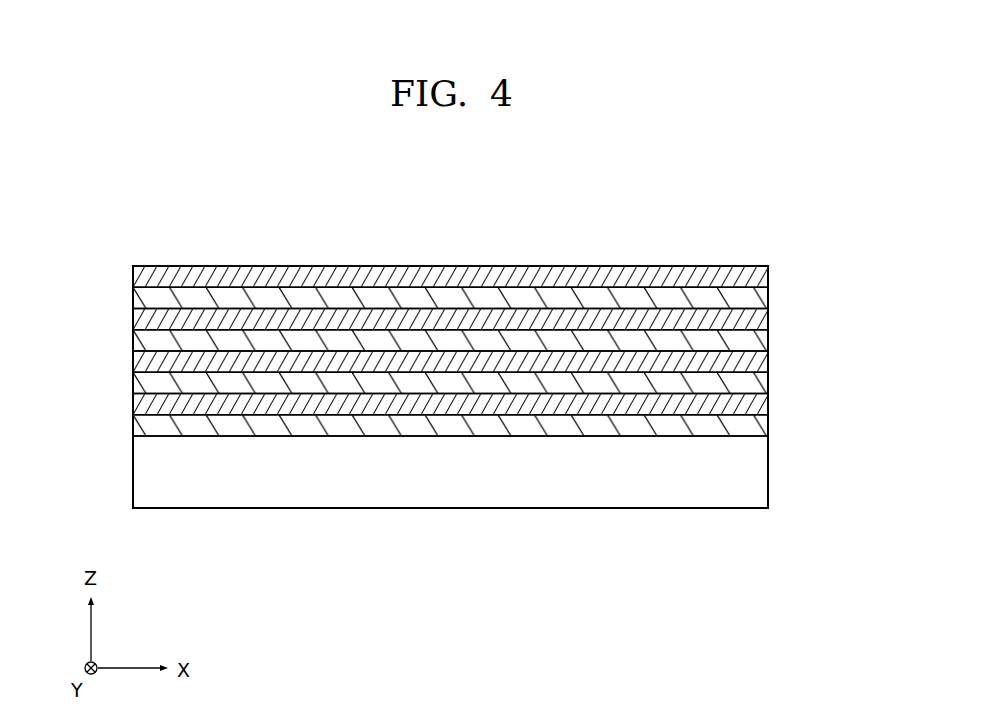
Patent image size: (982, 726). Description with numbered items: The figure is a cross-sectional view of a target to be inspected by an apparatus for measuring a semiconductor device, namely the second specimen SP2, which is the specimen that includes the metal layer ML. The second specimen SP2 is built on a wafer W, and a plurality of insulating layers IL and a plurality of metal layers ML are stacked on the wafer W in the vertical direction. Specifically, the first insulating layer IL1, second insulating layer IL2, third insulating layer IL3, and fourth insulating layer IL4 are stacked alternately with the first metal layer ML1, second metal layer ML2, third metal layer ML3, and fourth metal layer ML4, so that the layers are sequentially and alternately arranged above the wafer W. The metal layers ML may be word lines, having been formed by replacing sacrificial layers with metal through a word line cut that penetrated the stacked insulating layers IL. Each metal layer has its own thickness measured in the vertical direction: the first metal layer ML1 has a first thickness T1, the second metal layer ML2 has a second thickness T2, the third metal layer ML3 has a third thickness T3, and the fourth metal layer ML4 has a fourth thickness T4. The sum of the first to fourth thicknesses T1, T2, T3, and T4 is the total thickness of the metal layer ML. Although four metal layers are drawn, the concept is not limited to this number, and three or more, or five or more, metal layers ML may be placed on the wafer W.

The second specimen SP2 is at (855, 222).
The wafer W is at (769, 470).
The metal layer ML is at (529, 341).
The first metal layer ML1 is at (501, 404).
The second metal layer ML2 is at (769, 363).
The third metal layer ML3 is at (769, 320).
The fourth metal layer ML4 is at (769, 278).
The insulating layer IL is at (386, 363).
The first insulating layer IL1 is at (407, 427).
The second insulating layer IL2 is at (133, 384).
The third insulating layer IL3 is at (133, 341).
The fourth insulating layer IL4 is at (133, 298).
The first thickness T1 is at (616, 374).
The second thickness T2 is at (561, 331).
The third thickness T3 is at (506, 289).
The fourth thickness T4 is at (451, 238).